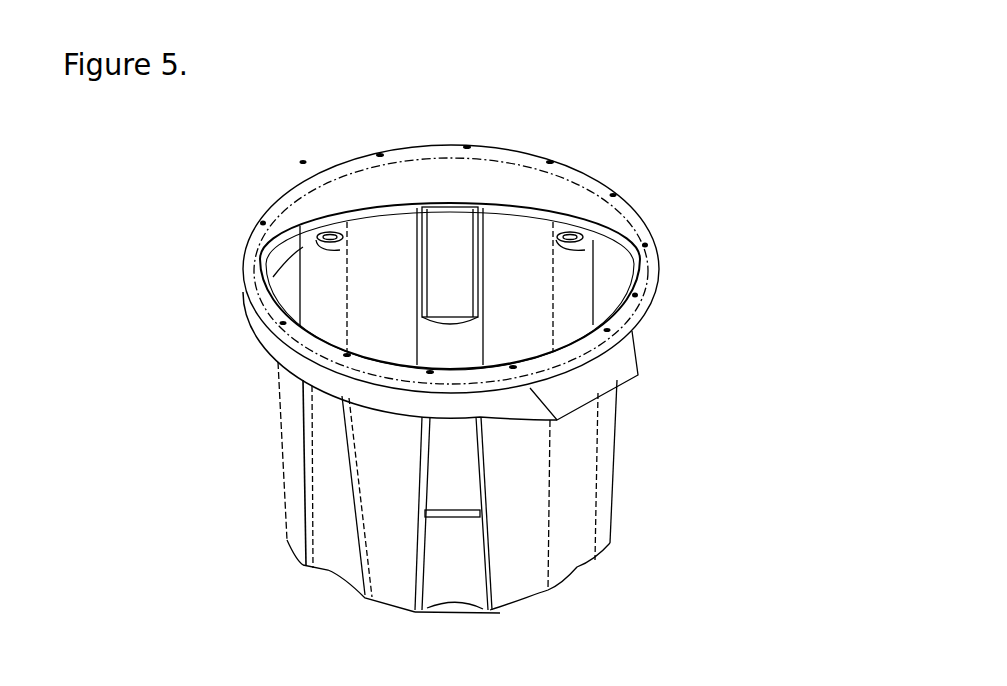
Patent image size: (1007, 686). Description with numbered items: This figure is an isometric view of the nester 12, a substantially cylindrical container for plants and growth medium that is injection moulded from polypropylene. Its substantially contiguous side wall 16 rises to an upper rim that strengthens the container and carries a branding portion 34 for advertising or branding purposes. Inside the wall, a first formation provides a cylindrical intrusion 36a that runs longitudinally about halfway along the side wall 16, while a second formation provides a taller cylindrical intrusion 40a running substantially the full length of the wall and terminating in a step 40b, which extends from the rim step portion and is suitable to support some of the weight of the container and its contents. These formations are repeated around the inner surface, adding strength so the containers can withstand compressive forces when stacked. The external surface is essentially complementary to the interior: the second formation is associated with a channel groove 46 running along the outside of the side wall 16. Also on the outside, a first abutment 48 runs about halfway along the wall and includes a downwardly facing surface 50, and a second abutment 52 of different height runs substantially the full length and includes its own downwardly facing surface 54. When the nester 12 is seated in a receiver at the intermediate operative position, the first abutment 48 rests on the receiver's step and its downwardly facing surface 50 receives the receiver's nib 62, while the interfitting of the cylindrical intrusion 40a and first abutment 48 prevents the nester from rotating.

The nester 12 is at (714, 127).
The side wall 16 is at (612, 402).
The branding portion 34 is at (595, 332).
The cylindrical intrusion 36a is at (440, 353).
The cylindrical intrusion 40a is at (328, 293).
The step 40b is at (452, 312).
The channel groove 46 is at (567, 547).
The first abutment 48 is at (467, 478).
The downwardly facing surface 50 is at (455, 522).
The second abutment 52 is at (275, 394).
The downwardly facing surface 54 is at (303, 566).
The nib 62 is at (567, 228).